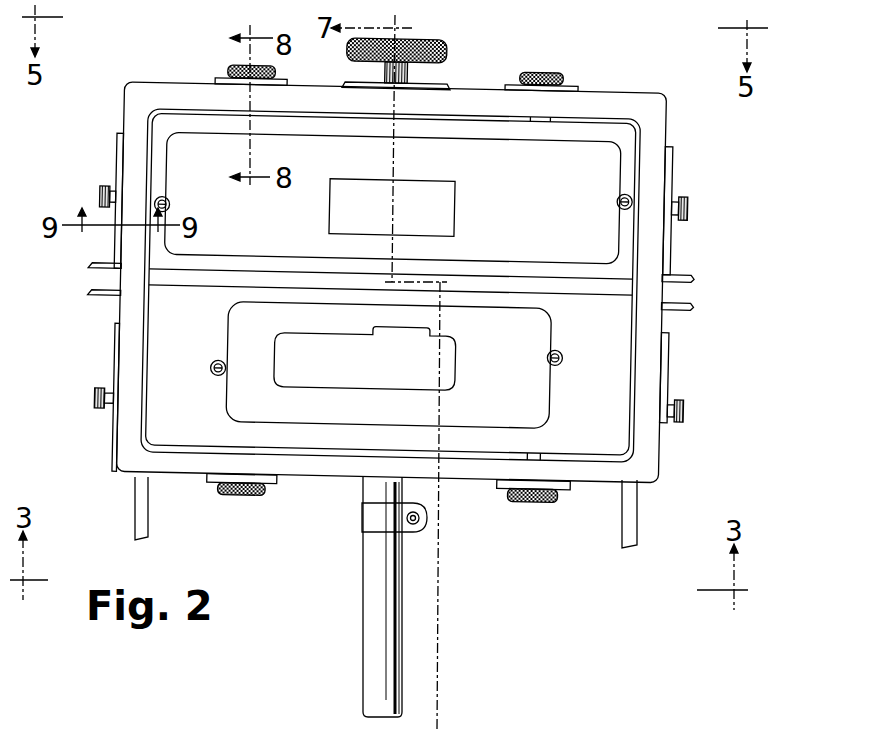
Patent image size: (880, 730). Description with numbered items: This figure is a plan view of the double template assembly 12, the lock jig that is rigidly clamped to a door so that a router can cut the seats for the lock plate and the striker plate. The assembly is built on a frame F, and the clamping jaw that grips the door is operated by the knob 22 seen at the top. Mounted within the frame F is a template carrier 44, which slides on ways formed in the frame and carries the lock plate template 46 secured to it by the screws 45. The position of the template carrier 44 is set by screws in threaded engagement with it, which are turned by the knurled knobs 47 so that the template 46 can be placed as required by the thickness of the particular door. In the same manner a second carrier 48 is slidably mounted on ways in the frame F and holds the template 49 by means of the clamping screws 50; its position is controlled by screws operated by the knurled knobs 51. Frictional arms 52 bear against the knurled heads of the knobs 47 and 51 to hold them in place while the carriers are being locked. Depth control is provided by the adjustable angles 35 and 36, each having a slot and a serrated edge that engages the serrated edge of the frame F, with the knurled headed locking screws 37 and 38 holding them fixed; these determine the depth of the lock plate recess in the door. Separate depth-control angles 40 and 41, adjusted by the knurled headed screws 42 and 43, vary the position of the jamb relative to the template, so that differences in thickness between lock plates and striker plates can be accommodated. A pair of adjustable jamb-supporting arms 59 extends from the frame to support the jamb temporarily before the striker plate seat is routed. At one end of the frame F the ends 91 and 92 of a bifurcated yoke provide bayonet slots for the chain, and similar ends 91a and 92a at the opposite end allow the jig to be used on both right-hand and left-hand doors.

The double template assembly 12 is at (648, 66).
The frame F is at (667, 108).
The knob 22 is at (447, 52).
The knurled knobs 47 is at (233, 66).
The frictional arms 52 is at (222, 79).
The adjustable angle 36 is at (117, 146).
The adjustable angle 35 is at (672, 161).
The knurled headed locking screw 38 is at (100, 198).
The knurled headed locking screw 37 is at (688, 208).
The screws 45 is at (169, 201).
The template 46 is at (422, 172).
The template carrier 44 is at (630, 249).
The yoke end 92a is at (92, 266).
The yoke end 92 is at (695, 279).
The yoke end 91a is at (92, 294).
The yoke end 91 is at (695, 305).
The depth-control angle 41 is at (116, 331).
The depth-control angle 40 is at (668, 359).
The clamping screws 50 is at (215, 362).
The template 49 is at (336, 391).
The knurled headed screw 43 is at (97, 399).
The knurled headed screw 42 is at (686, 411).
The carrier 48 is at (618, 428).
The knurled knobs 51 is at (237, 497).
The jamb-supporting arms 59 is at (136, 536).